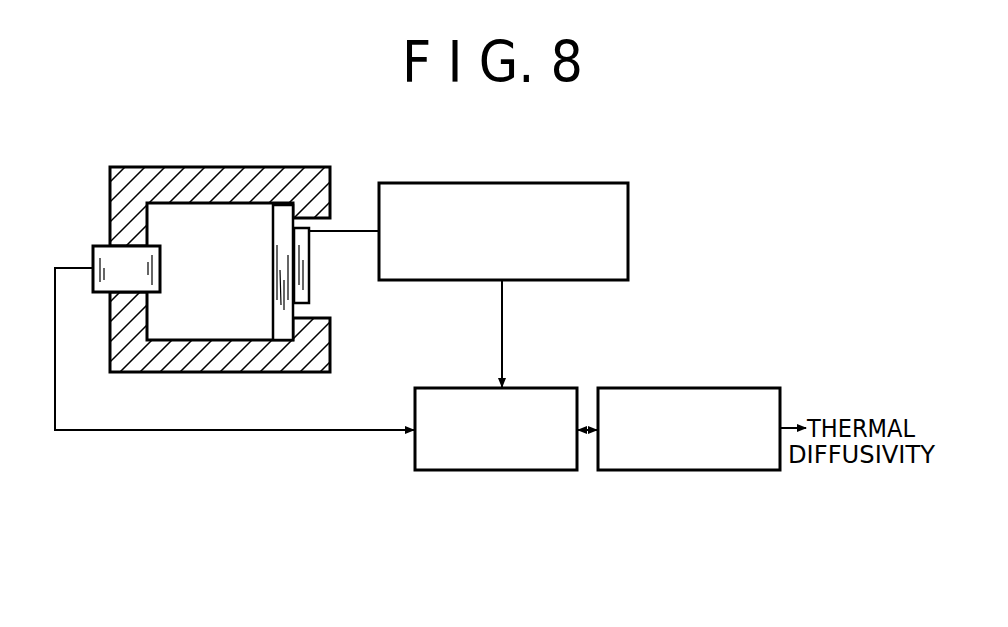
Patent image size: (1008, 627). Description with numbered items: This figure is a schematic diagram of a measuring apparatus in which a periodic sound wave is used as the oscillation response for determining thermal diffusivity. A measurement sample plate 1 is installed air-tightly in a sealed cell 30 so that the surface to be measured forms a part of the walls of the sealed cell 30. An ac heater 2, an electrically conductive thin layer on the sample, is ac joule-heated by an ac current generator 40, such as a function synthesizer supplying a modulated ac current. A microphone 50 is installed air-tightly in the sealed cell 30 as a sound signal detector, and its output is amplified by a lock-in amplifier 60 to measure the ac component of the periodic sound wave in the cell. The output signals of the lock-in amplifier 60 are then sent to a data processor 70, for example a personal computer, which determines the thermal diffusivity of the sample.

The measurement sample plate 1 is at (284, 212).
The ac heater 2 is at (303, 276).
The sealed cell 30 is at (309, 167).
The ac current generator 40 is at (607, 183).
The microphone 50 is at (92, 248).
The lock-in amplifier 60 is at (555, 388).
The data processor 70 is at (755, 388).